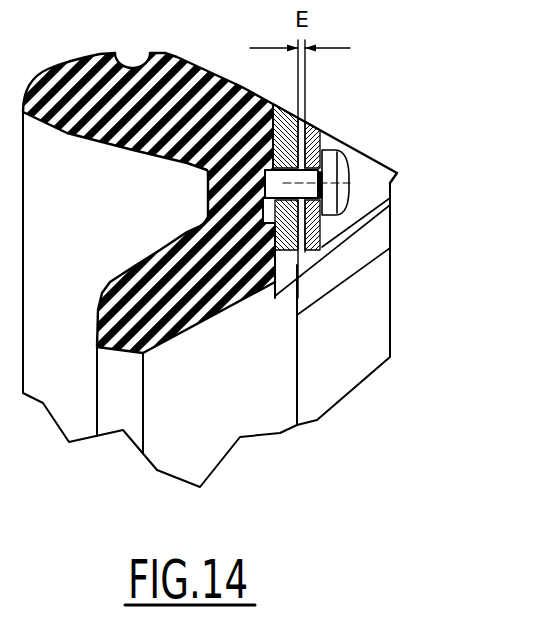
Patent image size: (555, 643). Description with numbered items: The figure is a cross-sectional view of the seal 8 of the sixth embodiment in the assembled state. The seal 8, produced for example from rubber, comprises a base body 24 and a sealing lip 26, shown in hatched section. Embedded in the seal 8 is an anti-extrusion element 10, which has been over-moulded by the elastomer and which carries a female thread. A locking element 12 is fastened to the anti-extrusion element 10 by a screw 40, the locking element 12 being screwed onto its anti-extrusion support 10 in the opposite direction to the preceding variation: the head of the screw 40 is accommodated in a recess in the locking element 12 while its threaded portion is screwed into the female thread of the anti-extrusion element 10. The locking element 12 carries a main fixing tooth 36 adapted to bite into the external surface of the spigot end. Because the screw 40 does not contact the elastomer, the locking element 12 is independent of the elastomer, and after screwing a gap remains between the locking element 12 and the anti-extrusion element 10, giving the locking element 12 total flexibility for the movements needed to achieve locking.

The seal 8 is at (157, 88).
The base body 24 is at (62, 95).
The sealing lip 26 is at (160, 310).
The locking element 12 is at (360, 180).
The anti-extrusion element 10 is at (287, 252).
The main fixing tooth 36 is at (318, 247).
The screw 40 is at (330, 172).